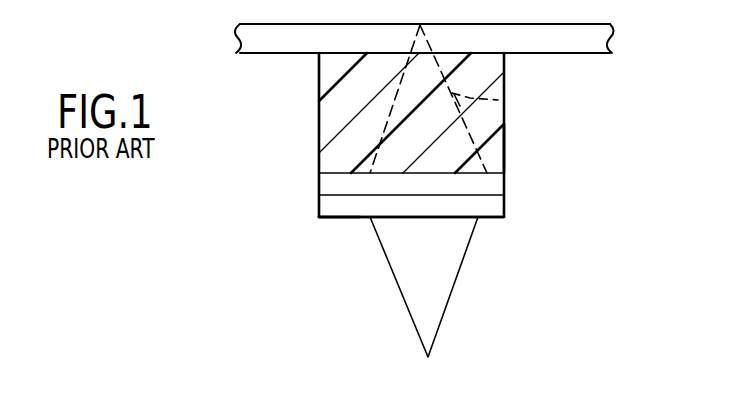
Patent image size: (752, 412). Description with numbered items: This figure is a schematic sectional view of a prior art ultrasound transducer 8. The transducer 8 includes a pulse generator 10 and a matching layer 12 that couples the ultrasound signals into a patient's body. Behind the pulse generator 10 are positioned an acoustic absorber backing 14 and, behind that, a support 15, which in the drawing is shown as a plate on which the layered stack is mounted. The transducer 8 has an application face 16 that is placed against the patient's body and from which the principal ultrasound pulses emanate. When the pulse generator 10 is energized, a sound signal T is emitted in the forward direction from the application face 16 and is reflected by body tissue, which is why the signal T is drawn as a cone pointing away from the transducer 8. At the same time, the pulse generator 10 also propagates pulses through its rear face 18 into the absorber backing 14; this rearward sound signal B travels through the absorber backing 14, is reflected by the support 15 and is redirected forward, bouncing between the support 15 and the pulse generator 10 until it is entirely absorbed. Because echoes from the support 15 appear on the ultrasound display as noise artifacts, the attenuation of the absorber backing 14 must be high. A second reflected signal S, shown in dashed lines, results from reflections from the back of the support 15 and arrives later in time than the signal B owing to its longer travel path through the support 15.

The ultrasound transducer 8 is at (280, 80).
The pulse generator 10 is at (500, 177).
The matching layer 12 is at (496, 212).
The acoustic absorber backing 14 is at (487, 110).
The support 15 is at (565, 43).
The application face 16 is at (333, 218).
The rear face 18 is at (340, 172).
The sound signal B is at (496, 130).
The signal S is at (498, 100).
The sound signal T is at (476, 224).